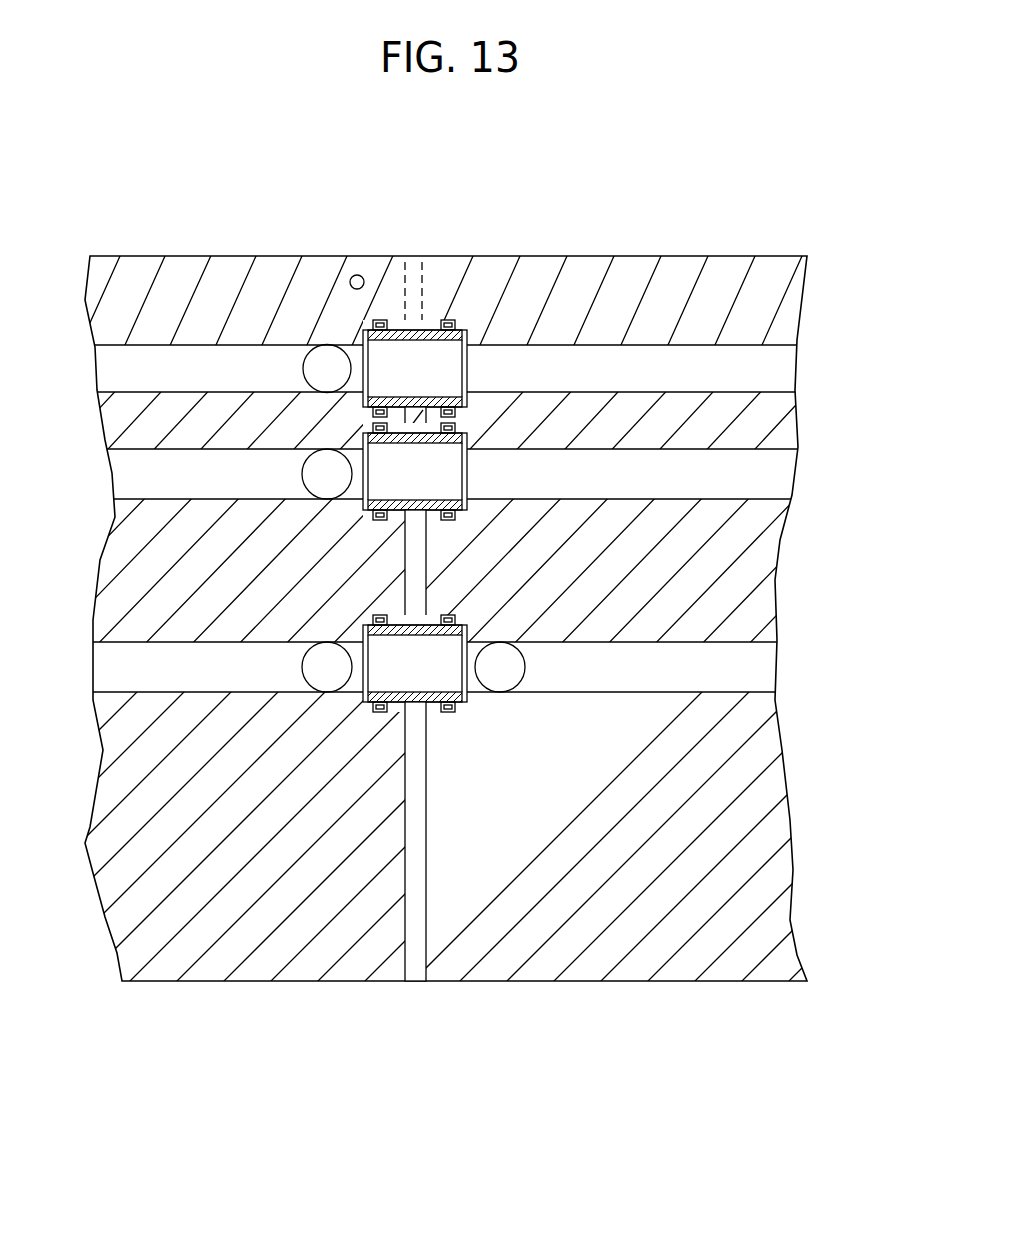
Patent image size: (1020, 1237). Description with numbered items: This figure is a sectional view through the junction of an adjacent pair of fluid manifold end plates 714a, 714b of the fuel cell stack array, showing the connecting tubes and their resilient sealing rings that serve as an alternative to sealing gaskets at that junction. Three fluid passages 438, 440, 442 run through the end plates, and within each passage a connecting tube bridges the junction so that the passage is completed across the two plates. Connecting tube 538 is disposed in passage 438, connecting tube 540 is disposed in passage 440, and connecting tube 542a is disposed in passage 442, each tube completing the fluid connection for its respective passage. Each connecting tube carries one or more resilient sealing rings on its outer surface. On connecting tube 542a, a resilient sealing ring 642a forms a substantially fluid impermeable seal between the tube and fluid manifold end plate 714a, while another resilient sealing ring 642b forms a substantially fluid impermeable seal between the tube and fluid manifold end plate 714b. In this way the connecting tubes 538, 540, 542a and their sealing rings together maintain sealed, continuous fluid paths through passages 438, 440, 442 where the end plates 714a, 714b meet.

The passage 438 is at (767, 657).
The passage 440 is at (778, 460).
The passage 442 is at (637, 352).
The connecting tube 538 is at (402, 677).
The connecting tube 540 is at (378, 455).
The connecting tube 542a is at (405, 360).
The resilient sealing ring 642a is at (450, 320).
The resilient sealing ring 642b is at (379, 322).
The fluid manifold end plate 714a is at (755, 960).
The fluid manifold end plate 714b is at (145, 952).